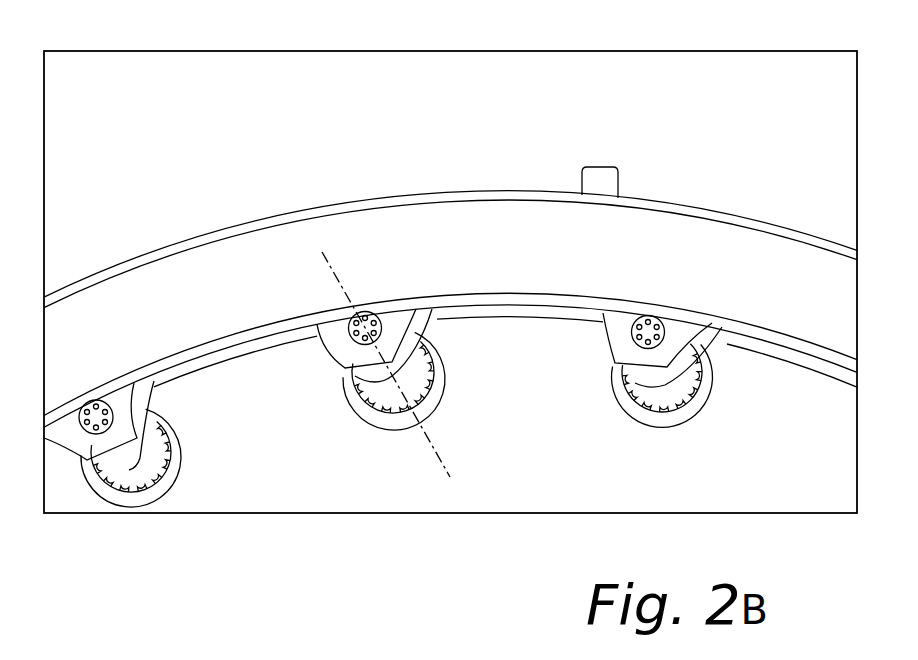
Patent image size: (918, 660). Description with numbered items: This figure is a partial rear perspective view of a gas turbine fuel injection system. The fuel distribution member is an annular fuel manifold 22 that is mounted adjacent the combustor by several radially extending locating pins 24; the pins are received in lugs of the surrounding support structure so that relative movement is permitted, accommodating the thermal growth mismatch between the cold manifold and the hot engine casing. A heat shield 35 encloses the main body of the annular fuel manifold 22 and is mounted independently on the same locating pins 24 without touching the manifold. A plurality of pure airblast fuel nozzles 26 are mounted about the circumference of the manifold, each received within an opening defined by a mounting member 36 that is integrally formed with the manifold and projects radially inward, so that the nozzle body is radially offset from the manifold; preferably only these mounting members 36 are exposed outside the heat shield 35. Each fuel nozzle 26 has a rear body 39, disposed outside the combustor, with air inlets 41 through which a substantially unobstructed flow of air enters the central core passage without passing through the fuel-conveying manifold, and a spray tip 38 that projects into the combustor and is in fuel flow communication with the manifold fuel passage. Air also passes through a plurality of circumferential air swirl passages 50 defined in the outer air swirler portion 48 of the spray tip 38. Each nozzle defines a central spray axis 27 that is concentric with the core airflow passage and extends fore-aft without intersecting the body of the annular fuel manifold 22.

The annular fuel manifold 22 is at (452, 232).
The locating pin 24 is at (598, 180).
The fuel nozzle 26 is at (371, 441).
The central spray axis 27 is at (447, 452).
The heat shield 35 is at (808, 295).
The mounting member 36 is at (348, 355).
The spray tip 38 is at (462, 374).
The rear body 39 is at (635, 321).
The air inlet 41 is at (656, 320).
The outer air swirler portion 48 is at (178, 482).
The air swirl passage 50 is at (131, 490).